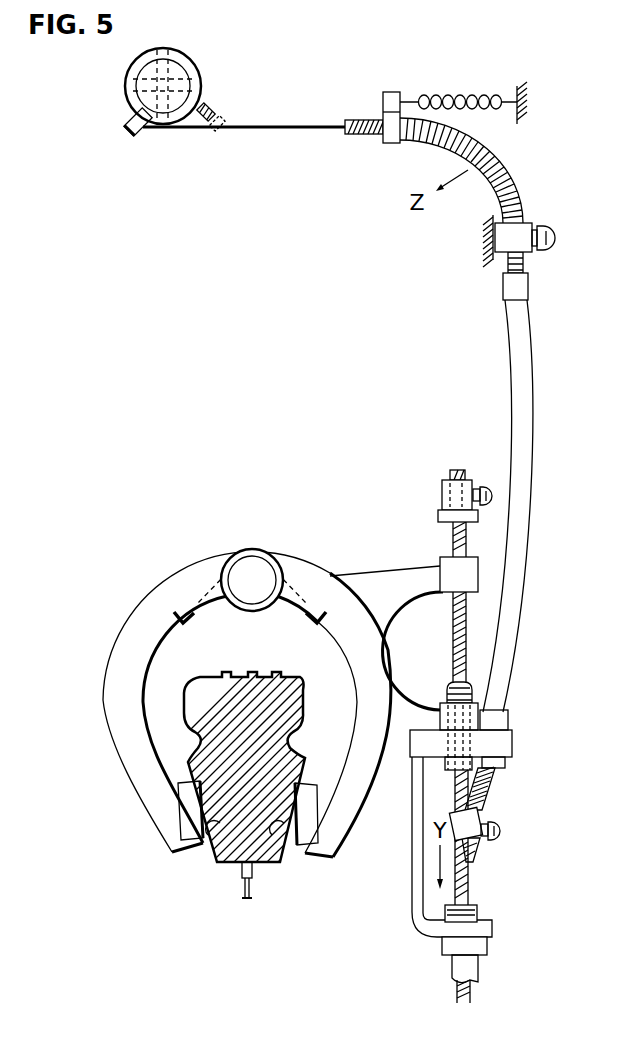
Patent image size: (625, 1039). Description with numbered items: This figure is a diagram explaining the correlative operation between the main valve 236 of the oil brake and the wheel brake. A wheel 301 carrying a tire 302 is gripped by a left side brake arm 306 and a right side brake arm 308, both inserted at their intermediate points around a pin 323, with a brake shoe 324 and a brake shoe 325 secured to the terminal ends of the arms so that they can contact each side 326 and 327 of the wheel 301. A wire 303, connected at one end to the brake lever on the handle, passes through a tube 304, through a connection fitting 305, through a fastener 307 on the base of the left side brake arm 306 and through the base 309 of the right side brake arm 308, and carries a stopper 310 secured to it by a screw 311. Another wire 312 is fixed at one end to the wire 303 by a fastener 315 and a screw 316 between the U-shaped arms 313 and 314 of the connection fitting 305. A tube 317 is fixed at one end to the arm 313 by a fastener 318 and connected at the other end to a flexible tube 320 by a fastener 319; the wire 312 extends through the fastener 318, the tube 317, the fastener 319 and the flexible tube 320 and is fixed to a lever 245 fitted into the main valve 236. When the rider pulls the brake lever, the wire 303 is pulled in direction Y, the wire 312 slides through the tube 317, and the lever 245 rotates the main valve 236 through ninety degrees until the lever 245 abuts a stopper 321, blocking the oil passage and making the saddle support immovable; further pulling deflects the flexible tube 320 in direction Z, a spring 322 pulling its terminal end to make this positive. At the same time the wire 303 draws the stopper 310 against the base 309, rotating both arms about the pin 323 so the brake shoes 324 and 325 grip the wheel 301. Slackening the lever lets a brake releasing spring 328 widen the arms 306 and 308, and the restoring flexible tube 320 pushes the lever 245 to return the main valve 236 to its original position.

The main valve 236 is at (190, 60).
The lever 245 is at (130, 118).
The wheel 301 is at (212, 780).
The tire 302 is at (198, 682).
The wire 303 is at (458, 636).
The tube 304 is at (468, 965).
The connection fitting 305 is at (415, 878).
The left side brake arm 306 is at (142, 608).
The fastener 307 is at (440, 720).
The right side brake arm 308 is at (383, 583).
The base 309 is at (437, 560).
The stopper 310 is at (448, 480).
The screw 311 is at (482, 486).
The wire 312 is at (298, 122).
The U-shaped arm 313 is at (500, 740).
The U-shaped arm 314 is at (480, 927).
The fastener 315 is at (480, 820).
The screw 316 is at (498, 831).
The tube 317 is at (508, 603).
The fastener 318 is at (495, 720).
The fastener 319 is at (518, 284).
The flexible tube 320 is at (515, 166).
The stopper 321 is at (215, 100).
The spring 322 is at (453, 98).
The pin 323 is at (245, 570).
The brake shoe 324 is at (188, 812).
The brake shoe 325 is at (300, 812).
The side of the wheel 326 is at (225, 822).
The side of the wheel 327 is at (278, 813).
The brake releasing spring 328 is at (178, 612).